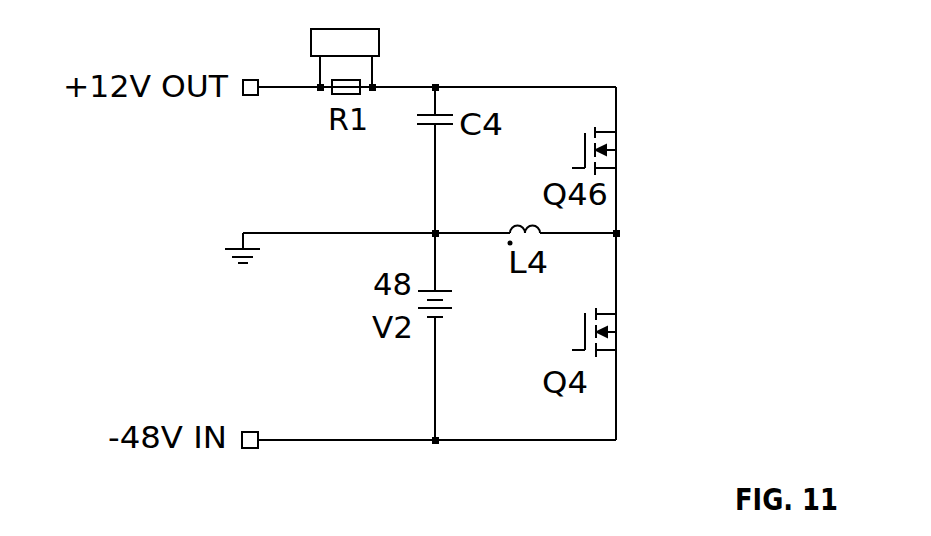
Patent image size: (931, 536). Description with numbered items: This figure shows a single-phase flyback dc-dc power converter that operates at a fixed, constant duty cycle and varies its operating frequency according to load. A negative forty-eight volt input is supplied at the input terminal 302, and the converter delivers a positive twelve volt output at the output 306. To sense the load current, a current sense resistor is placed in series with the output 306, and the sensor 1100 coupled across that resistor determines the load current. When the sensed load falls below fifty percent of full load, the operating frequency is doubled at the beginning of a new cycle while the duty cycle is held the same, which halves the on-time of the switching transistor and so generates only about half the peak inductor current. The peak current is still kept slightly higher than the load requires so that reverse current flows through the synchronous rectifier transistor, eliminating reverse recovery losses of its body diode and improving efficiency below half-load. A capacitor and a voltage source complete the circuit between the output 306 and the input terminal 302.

The output 306 is at (250, 78).
The sensor 1100 is at (335, 28).
The -48V input terminal 302 is at (252, 449).